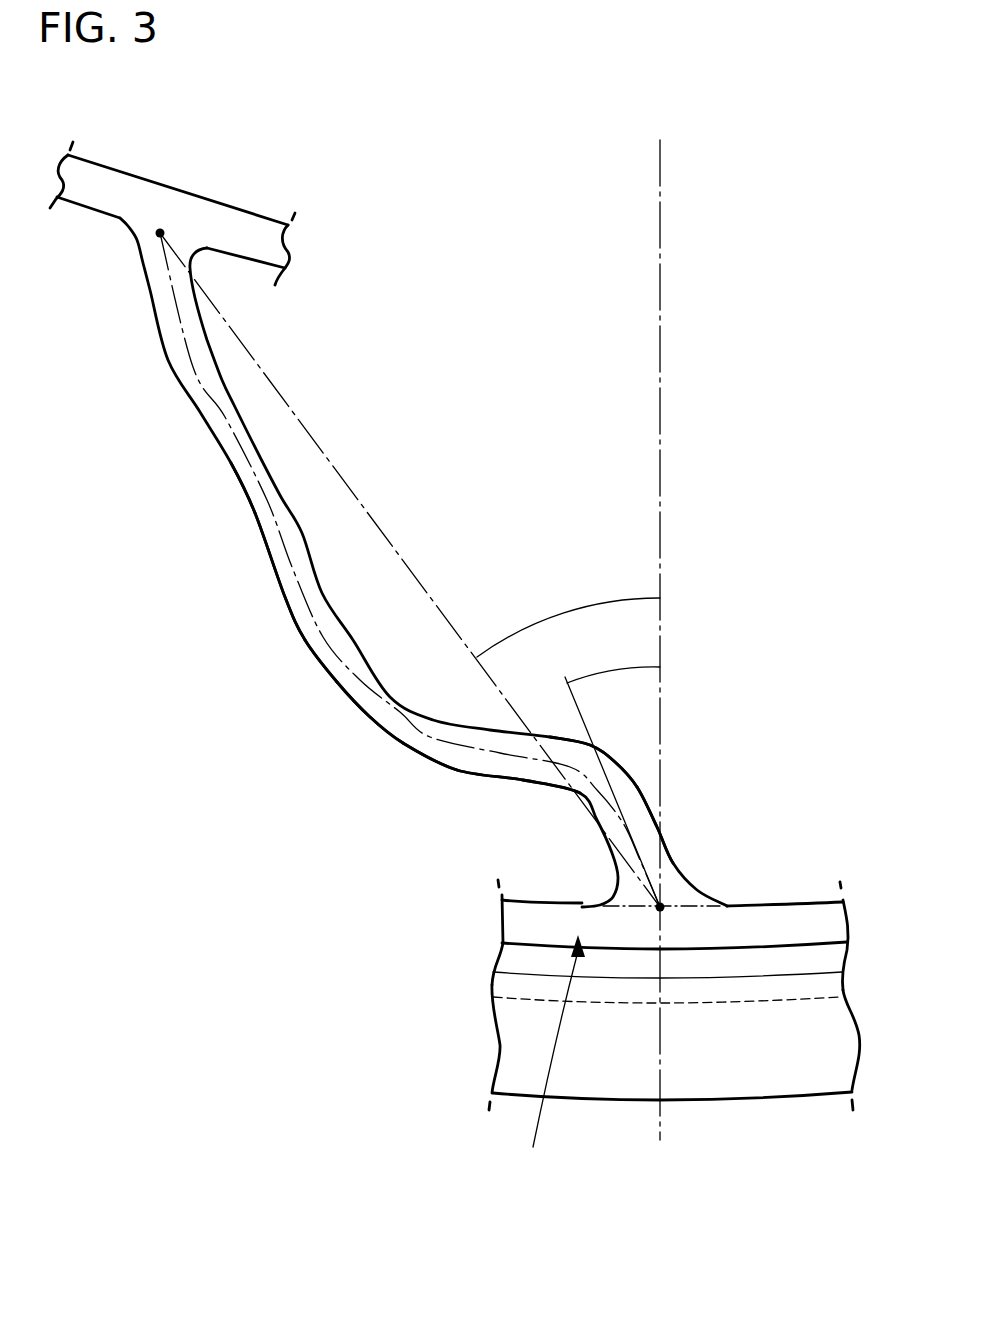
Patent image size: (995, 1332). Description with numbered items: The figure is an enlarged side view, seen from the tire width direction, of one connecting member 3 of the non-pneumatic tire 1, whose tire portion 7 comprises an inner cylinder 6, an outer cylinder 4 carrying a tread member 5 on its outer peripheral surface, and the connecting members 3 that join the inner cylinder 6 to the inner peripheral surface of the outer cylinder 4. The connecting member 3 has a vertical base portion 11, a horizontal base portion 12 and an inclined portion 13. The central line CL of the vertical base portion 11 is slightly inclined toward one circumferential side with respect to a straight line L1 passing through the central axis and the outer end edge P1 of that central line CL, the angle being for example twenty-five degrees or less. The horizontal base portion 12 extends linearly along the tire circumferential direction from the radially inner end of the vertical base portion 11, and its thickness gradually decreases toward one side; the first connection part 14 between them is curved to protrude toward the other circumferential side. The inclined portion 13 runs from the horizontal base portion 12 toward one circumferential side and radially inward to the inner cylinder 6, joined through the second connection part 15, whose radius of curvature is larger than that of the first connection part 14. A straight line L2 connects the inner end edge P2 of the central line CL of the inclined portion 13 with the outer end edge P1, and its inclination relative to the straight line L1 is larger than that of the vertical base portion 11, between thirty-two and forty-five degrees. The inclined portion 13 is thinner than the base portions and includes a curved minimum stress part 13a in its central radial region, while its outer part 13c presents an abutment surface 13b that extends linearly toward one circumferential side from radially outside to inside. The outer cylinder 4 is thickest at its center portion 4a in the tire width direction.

The non-pneumatic tire 1 is at (507, 218).
The connecting member 3 is at (158, 392).
The outer cylinder 4 is at (787, 918).
The center portion 4a is at (713, 1003).
The tread member 5 is at (778, 1070).
The inner cylinder 6 is at (240, 230).
The tire portion 7 is at (555, 1057).
The vertical base portion 11 is at (657, 825).
The horizontal base portion 12 is at (513, 780).
The inclined portion 13 is at (270, 600).
The minimum stress part 13a is at (243, 488).
The abutment surface 13b is at (337, 682).
The outer part 13c is at (321, 712).
The first connection part 14 is at (603, 751).
The second connection part 15 is at (413, 753).
The outer end edge P1 is at (653, 913).
The inner end edge P2 is at (160, 233).
The straight line L1 is at (660, 260).
The straight line L2 is at (313, 438).
The central line CL is at (177, 320).